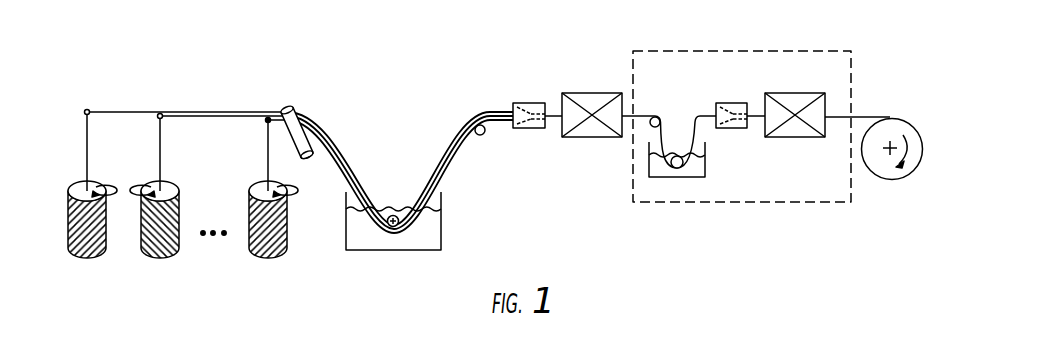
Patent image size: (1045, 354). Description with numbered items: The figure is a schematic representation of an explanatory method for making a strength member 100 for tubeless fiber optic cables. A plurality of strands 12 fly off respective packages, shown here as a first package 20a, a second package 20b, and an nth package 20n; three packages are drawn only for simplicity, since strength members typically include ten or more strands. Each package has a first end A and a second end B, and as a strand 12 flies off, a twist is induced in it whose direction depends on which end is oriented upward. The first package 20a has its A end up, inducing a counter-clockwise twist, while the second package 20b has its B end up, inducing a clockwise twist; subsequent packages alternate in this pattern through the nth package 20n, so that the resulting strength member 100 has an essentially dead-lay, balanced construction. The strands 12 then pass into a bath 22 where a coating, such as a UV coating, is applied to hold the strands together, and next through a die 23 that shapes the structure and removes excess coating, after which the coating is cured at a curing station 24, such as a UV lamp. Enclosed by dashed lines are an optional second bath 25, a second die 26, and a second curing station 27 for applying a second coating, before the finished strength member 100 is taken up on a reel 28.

The strand 12 is at (85, 145).
The first package 20a is at (88, 257).
The second package 20b is at (161, 257).
The nth package 20n is at (268, 257).
The bath 22 is at (374, 250).
The die 23 is at (523, 102).
The curing station 24 is at (577, 138).
The second bath 25 is at (706, 175).
The second die 26 is at (733, 130).
The second curing station 27 is at (795, 138).
The reel 28 is at (912, 118).
The strength member 100 is at (868, 117).